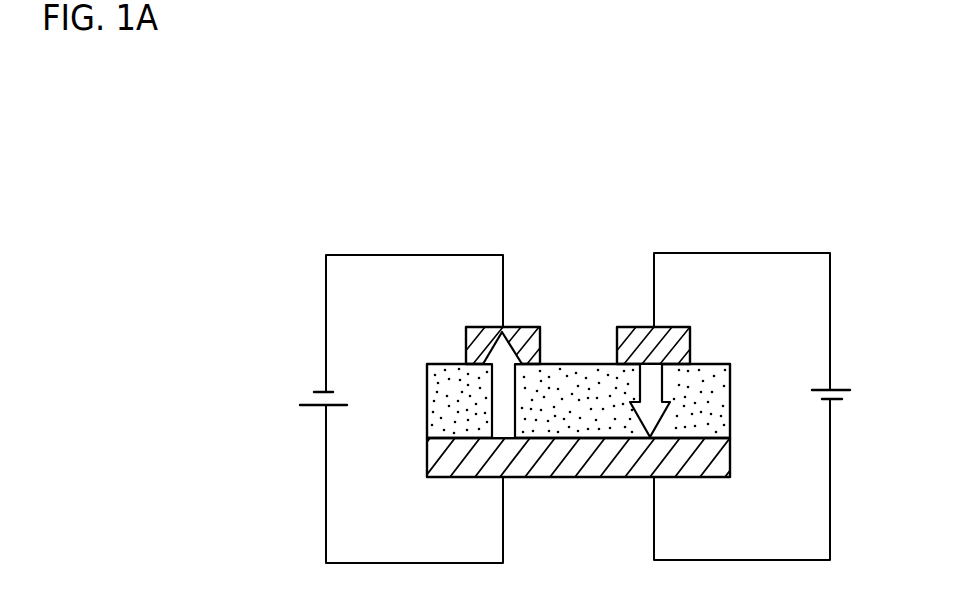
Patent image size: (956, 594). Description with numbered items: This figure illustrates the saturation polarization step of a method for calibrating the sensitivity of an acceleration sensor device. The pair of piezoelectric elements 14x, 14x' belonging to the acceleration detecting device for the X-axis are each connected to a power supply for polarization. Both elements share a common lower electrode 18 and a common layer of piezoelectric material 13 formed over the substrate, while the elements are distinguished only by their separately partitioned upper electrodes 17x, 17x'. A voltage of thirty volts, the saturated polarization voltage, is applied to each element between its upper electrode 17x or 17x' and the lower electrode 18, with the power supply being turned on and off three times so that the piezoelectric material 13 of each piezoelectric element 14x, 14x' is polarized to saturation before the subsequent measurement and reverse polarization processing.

The piezoelectric element 14x is at (442, 348).
The piezoelectric element 14x' is at (779, 342).
The upper electrode 17x is at (493, 285).
The upper electrode 17x' is at (714, 319).
The piezoelectric material 13 is at (722, 388).
The lower electrode 18 is at (720, 458).